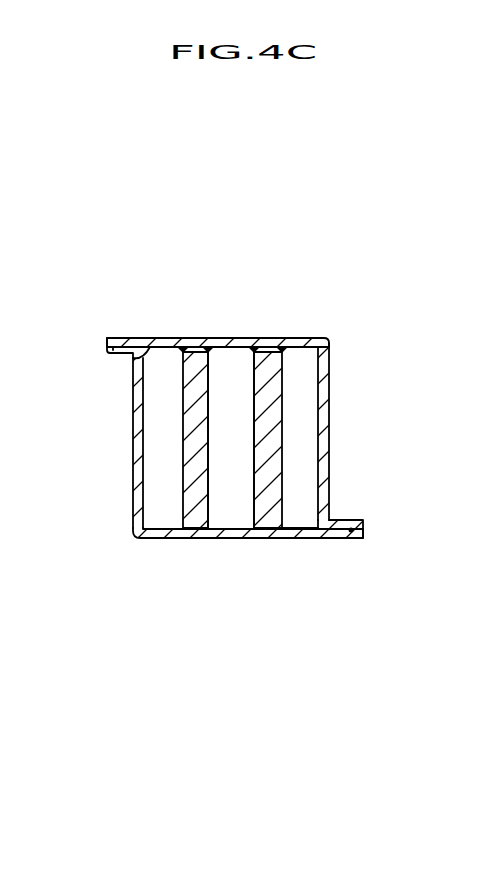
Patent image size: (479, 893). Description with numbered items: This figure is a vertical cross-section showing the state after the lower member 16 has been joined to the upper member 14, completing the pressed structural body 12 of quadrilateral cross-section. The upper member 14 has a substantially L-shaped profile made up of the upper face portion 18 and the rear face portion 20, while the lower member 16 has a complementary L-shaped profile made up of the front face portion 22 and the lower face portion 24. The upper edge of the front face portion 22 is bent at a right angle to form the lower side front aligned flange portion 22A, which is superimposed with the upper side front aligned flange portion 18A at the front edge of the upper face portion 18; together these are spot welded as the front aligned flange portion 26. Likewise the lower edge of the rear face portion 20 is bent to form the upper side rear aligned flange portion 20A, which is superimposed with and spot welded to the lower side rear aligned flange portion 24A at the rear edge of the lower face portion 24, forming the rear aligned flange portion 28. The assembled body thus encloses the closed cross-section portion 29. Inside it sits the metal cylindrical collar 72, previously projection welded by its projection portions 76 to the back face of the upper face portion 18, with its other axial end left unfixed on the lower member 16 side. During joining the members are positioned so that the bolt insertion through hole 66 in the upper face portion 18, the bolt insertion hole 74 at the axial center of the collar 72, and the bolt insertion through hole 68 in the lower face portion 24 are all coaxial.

The pressed structural body 12 is at (343, 310).
The upper member 14 is at (330, 370).
The lower member 16 is at (185, 540).
The upper face portion 18 is at (308, 338).
The upper side front aligned flange portion 18A is at (120, 338).
The rear face portion 20 is at (332, 408).
The upper side rear aligned flange portion 20A is at (345, 519).
The front face portion 22 is at (134, 430).
The lower side front aligned flange portion 22A is at (112, 360).
The lower face portion 24 is at (280, 538).
The lower side rear aligned flange portion 24A is at (350, 538).
The front aligned flange portion 26 is at (178, 222).
The rear aligned flange portion 28 is at (412, 448).
The closed cross-section portion 29 is at (289, 457).
The bolt insertion through hole 66 is at (243, 338).
The bolt insertion through hole 68 is at (243, 538).
The collar 72 is at (177, 498).
The bolt insertion hole 74 is at (217, 497).
The projection portion 76 is at (190, 338).